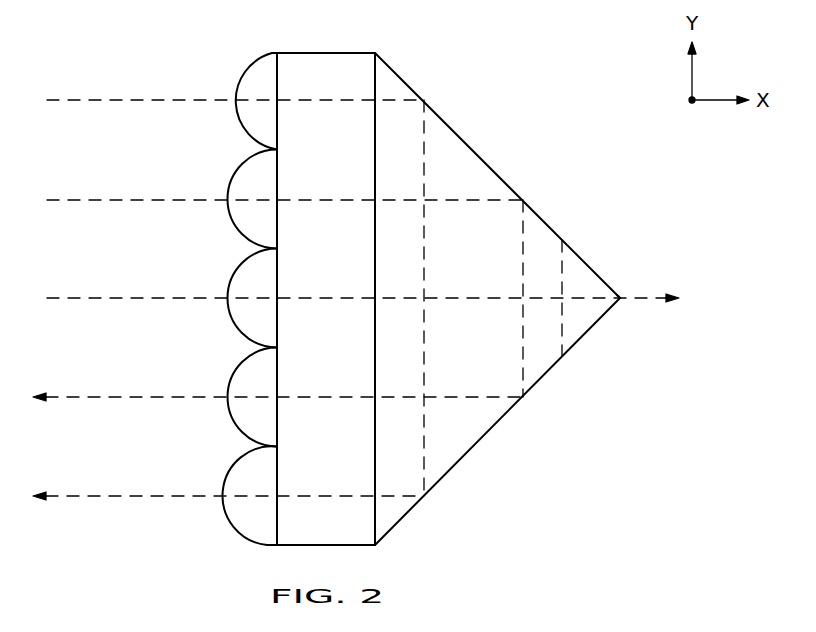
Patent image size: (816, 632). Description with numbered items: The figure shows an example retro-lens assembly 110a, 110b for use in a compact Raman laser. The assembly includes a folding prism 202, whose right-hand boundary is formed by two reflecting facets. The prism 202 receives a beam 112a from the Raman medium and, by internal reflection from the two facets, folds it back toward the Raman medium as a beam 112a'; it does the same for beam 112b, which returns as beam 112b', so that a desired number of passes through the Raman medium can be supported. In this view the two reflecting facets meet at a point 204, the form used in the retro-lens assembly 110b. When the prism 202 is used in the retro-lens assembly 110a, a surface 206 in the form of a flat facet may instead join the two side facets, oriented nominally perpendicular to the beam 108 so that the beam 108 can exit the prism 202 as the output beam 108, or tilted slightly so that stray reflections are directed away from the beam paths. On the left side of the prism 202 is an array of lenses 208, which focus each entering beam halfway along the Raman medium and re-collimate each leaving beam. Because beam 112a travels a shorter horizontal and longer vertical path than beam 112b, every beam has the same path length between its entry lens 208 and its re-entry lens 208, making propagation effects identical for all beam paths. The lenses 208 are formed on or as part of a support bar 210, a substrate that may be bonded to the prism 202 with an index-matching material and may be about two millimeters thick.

The output beam 108 is at (130, 298).
The retro-lens assembly 110a is at (532, 40).
The retro-lens assembly 110b is at (511, 299).
The beam 112a is at (235, 272).
The beam 112b is at (285, 270).
The beam 112b' is at (278, 371).
The beam 112a' is at (228, 469).
The folding prism 202 is at (545, 235).
The point 204 is at (621, 295).
The surface 206 is at (563, 340).
The lens 208 is at (265, 63).
The support bar 210 is at (327, 62).